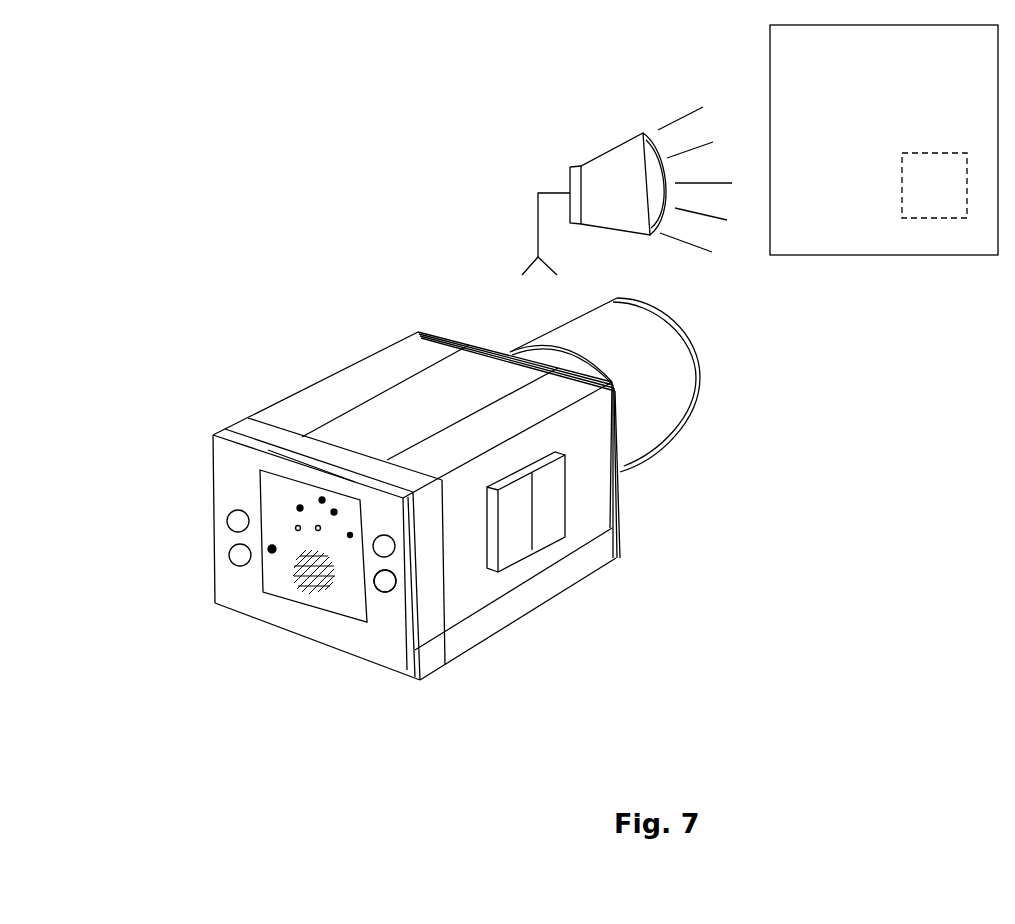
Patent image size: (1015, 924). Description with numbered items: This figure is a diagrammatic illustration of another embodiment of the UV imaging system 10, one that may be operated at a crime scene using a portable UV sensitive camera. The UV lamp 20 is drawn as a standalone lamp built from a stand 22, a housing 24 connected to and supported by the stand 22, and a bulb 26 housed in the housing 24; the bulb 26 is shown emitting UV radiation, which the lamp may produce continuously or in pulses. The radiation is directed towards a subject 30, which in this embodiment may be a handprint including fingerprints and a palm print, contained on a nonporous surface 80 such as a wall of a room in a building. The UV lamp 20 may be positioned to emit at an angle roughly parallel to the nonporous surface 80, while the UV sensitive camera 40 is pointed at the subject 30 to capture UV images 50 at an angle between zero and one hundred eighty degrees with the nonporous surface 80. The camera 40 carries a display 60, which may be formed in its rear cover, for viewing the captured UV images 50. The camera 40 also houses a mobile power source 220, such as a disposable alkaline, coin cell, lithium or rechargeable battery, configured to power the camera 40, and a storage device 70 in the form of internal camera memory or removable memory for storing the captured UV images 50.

The UV imaging system 10 is at (232, 160).
The UV lamp 20 is at (634, 154).
The stand 22 is at (518, 222).
The housing 24 is at (618, 184).
The bulb 26 is at (681, 154).
The subject 30 is at (934, 185).
The UV sensitive camera 40 is at (420, 506).
The UV images 50 is at (313, 546).
The display 60 is at (373, 642).
The storage device 70 is at (526, 512).
The nonporous surface 80 is at (884, 140).
The mobile power source 220 is at (518, 511).